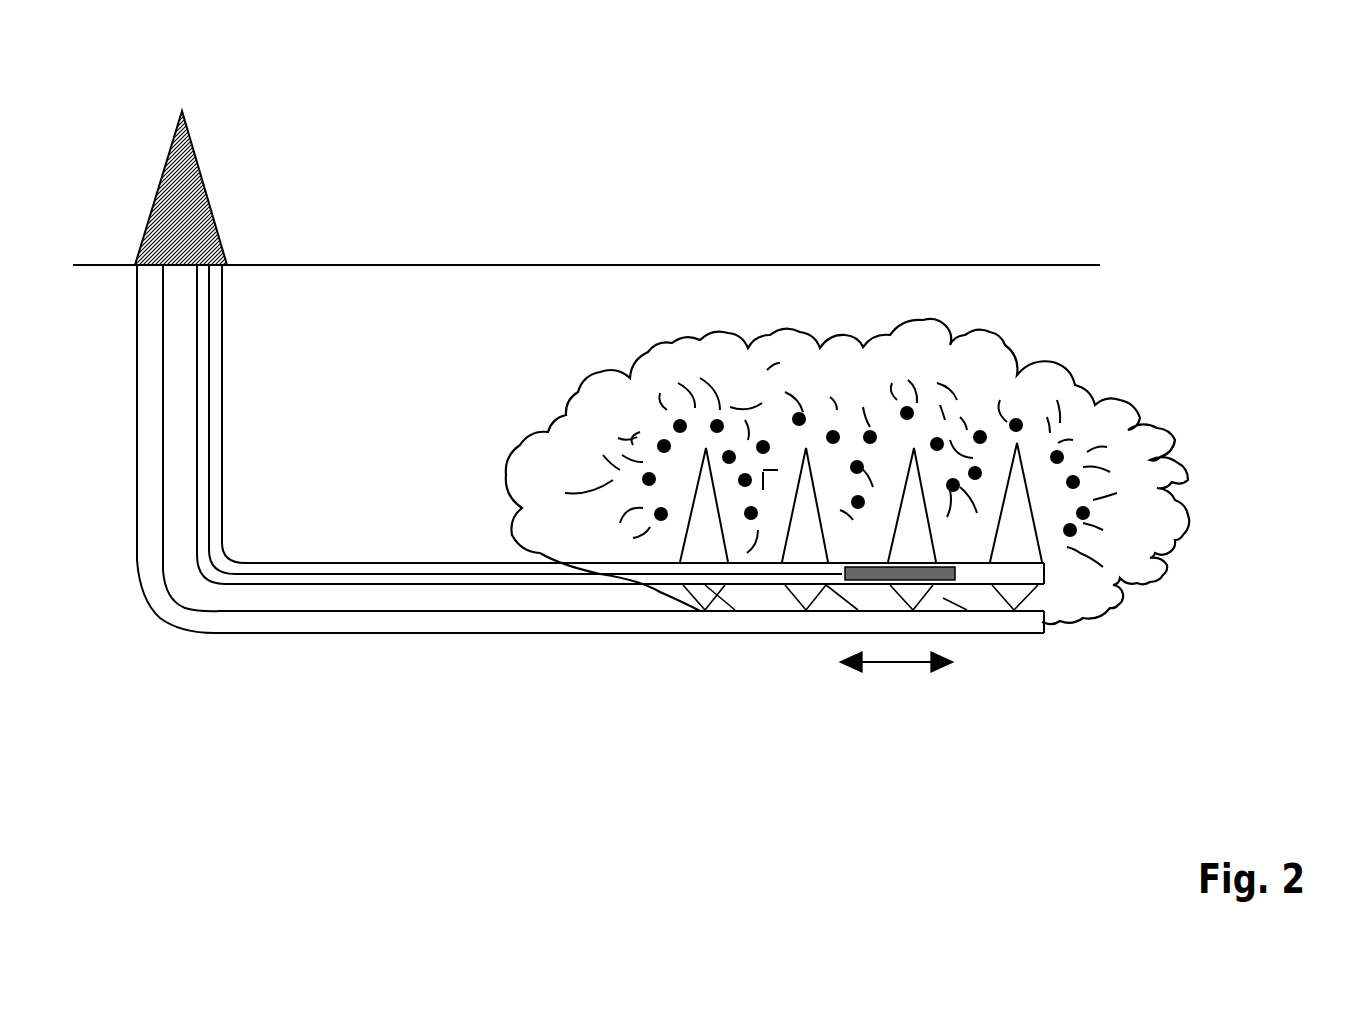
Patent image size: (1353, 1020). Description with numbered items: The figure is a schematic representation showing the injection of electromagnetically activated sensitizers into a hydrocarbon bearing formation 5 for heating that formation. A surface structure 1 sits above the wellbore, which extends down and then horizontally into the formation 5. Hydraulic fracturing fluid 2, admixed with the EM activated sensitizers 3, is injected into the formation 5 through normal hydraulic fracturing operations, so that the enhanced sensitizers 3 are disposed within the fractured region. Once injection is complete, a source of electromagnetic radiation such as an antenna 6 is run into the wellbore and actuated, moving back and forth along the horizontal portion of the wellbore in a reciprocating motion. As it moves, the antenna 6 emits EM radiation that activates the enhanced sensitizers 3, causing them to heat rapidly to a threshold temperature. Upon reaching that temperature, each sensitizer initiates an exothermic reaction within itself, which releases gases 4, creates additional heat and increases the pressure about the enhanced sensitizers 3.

The drilling rig / wellhead 1 is at (183, 235).
The hydraulic fracturing fluid 2 is at (696, 464).
The enhanced sensitizers 3 is at (808, 408).
The gases 4 is at (965, 380).
The hydrocarbon bearing formation 5 is at (398, 407).
The antenna 6 is at (963, 566).